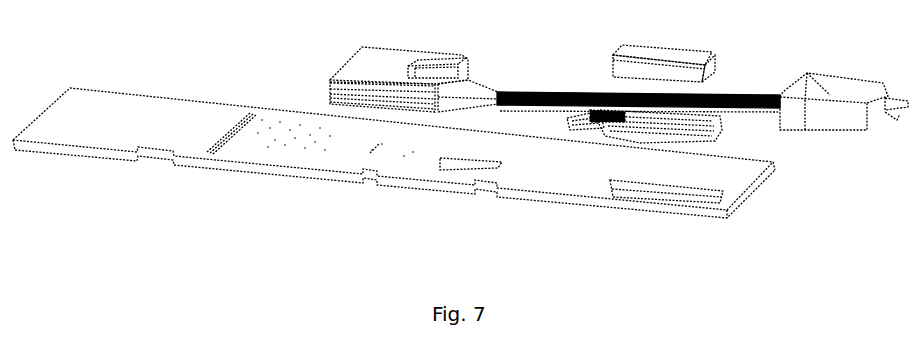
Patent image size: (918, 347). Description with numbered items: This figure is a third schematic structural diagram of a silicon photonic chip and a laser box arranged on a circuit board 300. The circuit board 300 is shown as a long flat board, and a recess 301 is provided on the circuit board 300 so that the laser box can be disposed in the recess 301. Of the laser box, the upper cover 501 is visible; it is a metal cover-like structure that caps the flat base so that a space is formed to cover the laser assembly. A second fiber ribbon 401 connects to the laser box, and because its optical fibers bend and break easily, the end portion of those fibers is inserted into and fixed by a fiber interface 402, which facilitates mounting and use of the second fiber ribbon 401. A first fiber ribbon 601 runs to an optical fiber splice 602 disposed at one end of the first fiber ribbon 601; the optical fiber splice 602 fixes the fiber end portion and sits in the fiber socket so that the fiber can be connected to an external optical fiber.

The circuit board 300 is at (92, 104).
The recess 301 is at (616, 200).
The second fiber ribbon 401 is at (593, 110).
The fiber interface 402 is at (620, 117).
The upper cover 501 is at (684, 54).
The first fiber ribbon 601 is at (553, 92).
The optical fiber splice 602 is at (823, 83).